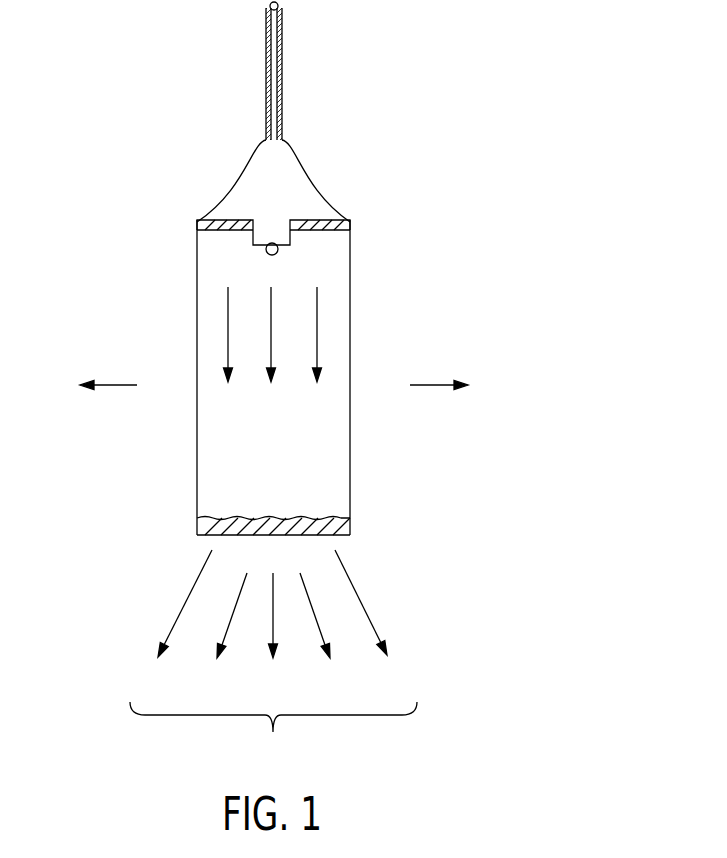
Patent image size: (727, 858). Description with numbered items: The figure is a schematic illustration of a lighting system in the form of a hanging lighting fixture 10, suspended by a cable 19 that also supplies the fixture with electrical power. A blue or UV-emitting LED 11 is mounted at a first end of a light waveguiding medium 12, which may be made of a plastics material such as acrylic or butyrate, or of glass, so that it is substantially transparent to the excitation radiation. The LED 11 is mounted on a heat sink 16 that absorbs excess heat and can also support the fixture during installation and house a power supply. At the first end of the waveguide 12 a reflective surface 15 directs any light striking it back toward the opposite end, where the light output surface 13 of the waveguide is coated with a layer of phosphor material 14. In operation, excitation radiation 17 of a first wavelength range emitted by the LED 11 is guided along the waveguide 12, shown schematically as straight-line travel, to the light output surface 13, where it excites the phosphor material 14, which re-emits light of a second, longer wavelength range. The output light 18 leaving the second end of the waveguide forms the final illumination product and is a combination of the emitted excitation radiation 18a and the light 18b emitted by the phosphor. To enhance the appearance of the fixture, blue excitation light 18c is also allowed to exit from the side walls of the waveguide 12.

The hanging lighting fixture 10 is at (512, 352).
The LED 11 is at (268, 243).
The light waveguiding medium 12 is at (351, 352).
The light output surface 13 is at (307, 501).
The phosphor material 14 is at (333, 528).
The reflective surface 15 is at (350, 222).
The heat sink 16 is at (282, 192).
The excitation radiation 17 is at (226, 330).
The output light 18 is at (273, 733).
The emitted excitation radiation 18a is at (200, 570).
The light emitted by the phosphor 18b is at (233, 605).
The blue excitation light 18c is at (112, 385).
The cable 19 is at (281, 78).